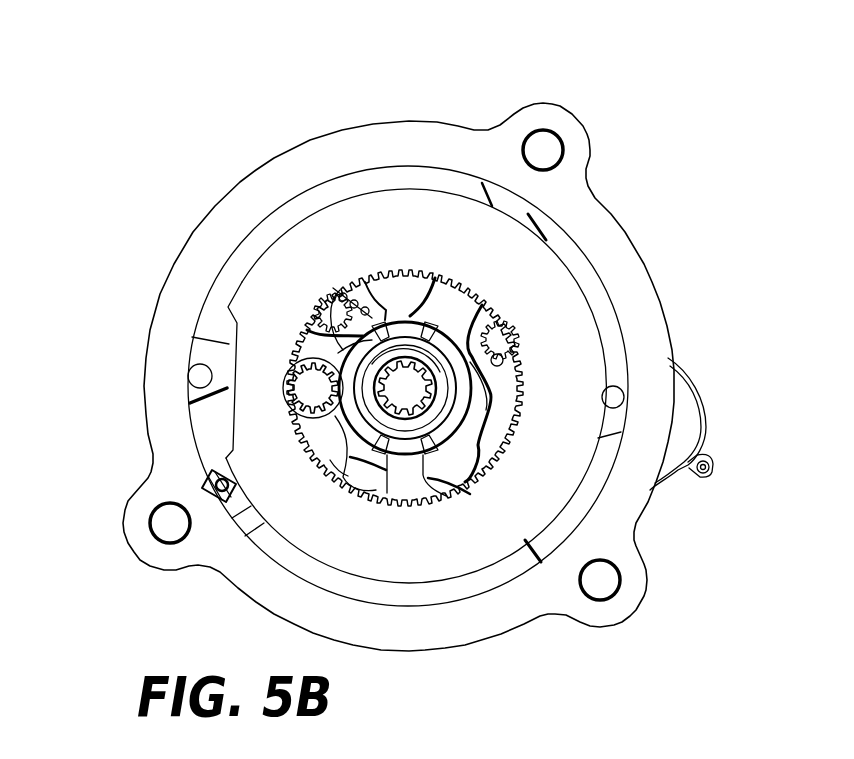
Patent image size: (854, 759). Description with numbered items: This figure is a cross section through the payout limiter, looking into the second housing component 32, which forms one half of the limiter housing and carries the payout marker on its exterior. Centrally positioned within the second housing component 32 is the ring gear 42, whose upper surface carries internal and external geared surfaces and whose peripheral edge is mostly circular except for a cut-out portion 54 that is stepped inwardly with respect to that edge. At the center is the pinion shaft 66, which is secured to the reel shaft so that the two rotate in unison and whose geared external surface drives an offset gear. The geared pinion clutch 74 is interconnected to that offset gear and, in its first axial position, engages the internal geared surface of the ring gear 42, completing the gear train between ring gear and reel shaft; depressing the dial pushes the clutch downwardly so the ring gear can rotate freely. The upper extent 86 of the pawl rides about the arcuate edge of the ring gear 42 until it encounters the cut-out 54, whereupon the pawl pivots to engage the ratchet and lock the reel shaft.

The second housing component 32 is at (393, 147).
The ring gear 42 is at (512, 297).
The cut-out portion 54 is at (221, 316).
The pinion shaft 66 is at (430, 400).
The pinion clutch 74 is at (300, 385).
The upper extent of pawl 86 is at (206, 474).